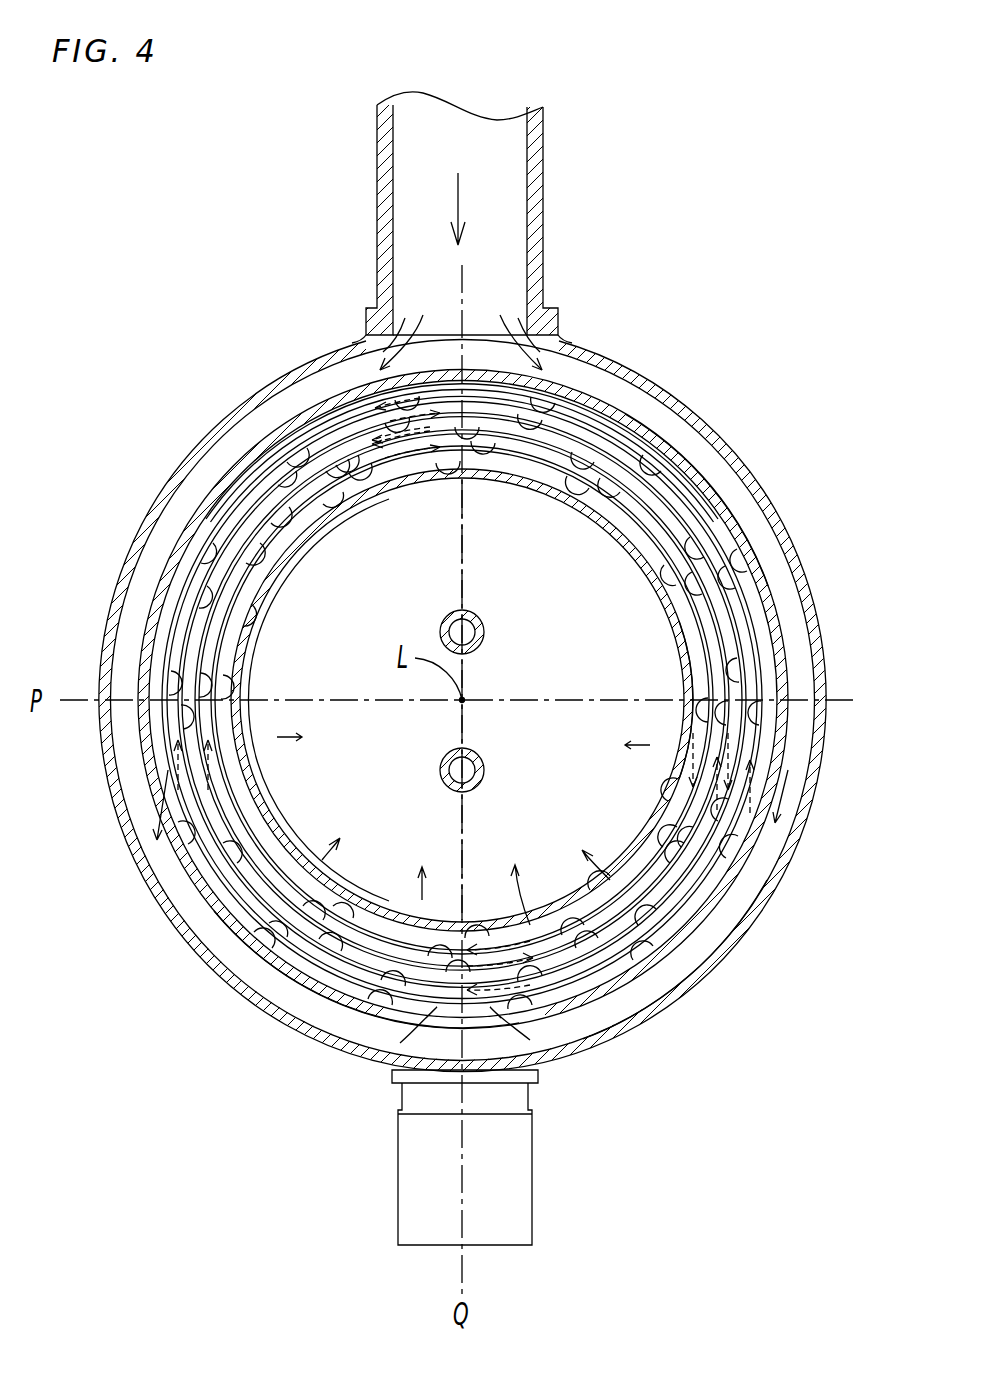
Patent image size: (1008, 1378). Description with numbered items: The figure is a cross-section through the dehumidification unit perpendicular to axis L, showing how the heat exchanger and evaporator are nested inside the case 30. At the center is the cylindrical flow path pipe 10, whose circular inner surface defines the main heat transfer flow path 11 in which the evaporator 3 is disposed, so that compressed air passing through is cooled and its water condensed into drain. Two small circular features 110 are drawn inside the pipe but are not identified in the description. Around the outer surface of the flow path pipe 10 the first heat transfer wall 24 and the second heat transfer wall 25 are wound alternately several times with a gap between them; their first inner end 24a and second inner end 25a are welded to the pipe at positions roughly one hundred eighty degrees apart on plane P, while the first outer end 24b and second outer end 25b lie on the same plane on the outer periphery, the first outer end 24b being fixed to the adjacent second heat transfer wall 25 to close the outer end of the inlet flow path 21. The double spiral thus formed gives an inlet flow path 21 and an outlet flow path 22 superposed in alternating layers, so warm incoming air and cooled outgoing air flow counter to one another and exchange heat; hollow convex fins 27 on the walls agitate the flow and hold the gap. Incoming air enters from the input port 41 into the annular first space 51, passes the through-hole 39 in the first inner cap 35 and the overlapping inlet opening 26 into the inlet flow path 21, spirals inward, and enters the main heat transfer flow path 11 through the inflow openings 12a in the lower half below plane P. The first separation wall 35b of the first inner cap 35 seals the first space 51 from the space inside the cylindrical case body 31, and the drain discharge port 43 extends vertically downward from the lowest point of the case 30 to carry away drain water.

The evaporator 3 is at (563, 560).
The flow path pipe 10 is at (410, 480).
The main heat transfer flow path 11 is at (378, 600).
The inflow openings 12a is at (250, 767).
The inlet flow path 21 is at (327, 903).
The outlet flow path 22 is at (770, 667).
The first heat transfer wall 24 is at (477, 922).
The first inner end 24a is at (690, 705).
The first outer end 24b is at (165, 705).
The second heat transfer wall 25 is at (305, 440).
The second inner end 25a is at (250, 697).
The second outer end 25b is at (783, 698).
The inlet opening 26 is at (538, 1013).
The convex fins 27 is at (267, 938).
The case 30 is at (614, 325).
The case body 31 is at (720, 443).
The first inner cap 35 is at (303, 985).
The first separation wall 35b is at (683, 957).
The through-hole 39 is at (388, 1013).
The input port 41 is at (408, 200).
The drain discharge port 43 is at (505, 1188).
The first space 51 is at (758, 501).
The center holes 110 is at (483, 628).